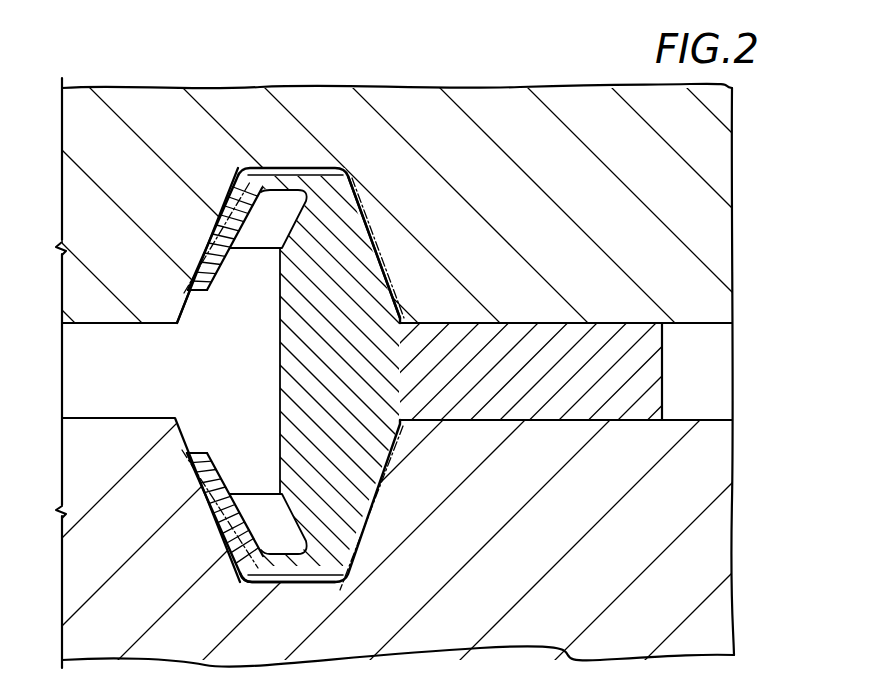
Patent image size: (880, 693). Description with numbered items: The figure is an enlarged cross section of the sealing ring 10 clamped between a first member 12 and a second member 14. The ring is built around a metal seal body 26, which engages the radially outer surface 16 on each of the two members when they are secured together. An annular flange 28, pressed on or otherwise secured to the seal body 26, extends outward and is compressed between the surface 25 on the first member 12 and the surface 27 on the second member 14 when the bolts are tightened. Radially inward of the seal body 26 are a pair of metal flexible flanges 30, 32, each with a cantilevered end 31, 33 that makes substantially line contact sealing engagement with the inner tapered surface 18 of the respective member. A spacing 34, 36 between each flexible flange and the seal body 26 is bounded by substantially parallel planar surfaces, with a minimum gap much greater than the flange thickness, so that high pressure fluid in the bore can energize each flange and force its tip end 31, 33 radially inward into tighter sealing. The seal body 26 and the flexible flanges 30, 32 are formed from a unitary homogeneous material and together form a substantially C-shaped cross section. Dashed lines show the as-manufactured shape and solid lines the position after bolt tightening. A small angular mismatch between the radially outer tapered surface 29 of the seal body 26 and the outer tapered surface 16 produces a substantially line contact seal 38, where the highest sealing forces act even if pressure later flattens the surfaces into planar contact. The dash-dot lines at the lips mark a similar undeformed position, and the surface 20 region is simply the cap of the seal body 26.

The sealing ring 10 is at (510, 204).
The first member 12 is at (657, 255).
The second member 14 is at (655, 540).
The radially outer surface 16 is at (381, 500).
The inner tapered surface 18 is at (178, 308).
The seal 20 is at (300, 170).
The surface on the body 25 is at (726, 330).
The metal seal body 26 is at (313, 358).
The surface on the body 27 is at (713, 418).
The annular flange 28 is at (627, 369).
The radially outer tapered surface 29 is at (392, 272).
The metal flexible flange 30 is at (226, 227).
The cantilevered end 31 is at (178, 292).
The metal flexible flange 32 is at (237, 520).
The cantilevered end 33 is at (180, 465).
The spacing 34 is at (273, 217).
The spacing 36 is at (246, 580).
The line contact seal 38 is at (354, 190).